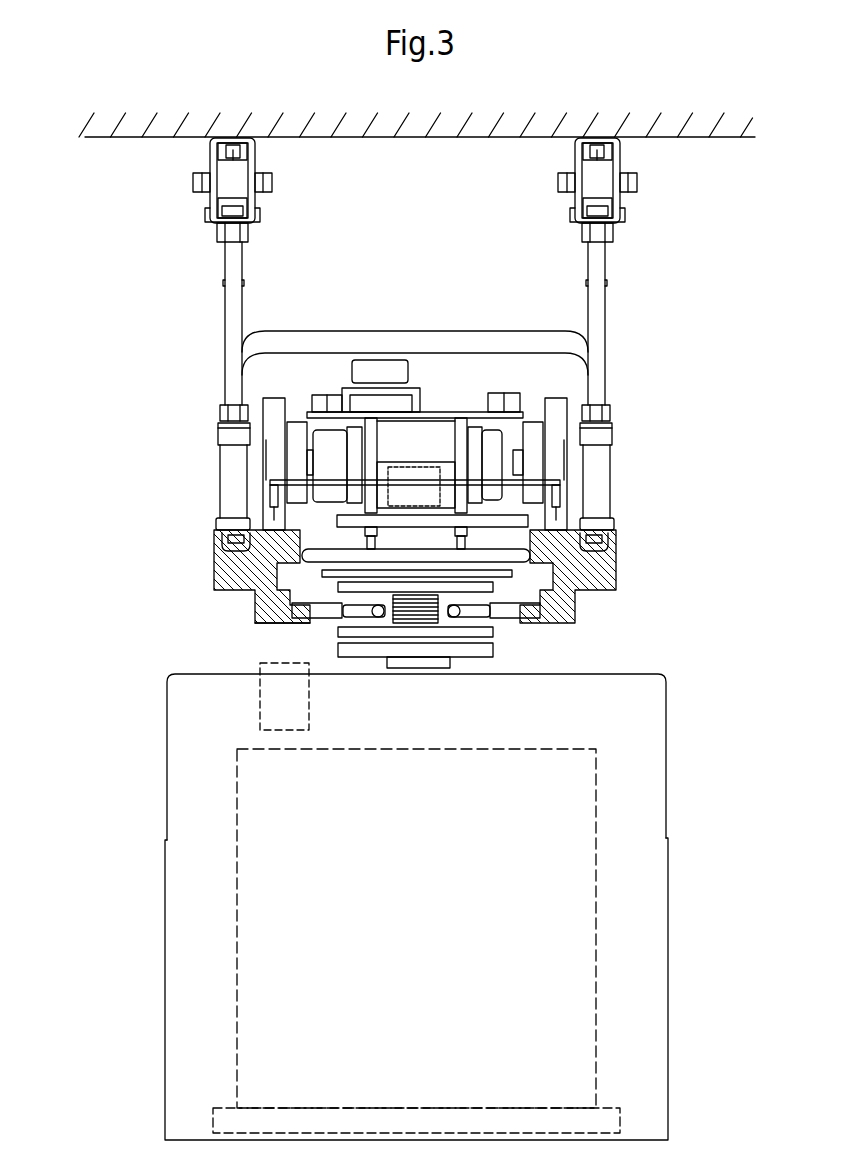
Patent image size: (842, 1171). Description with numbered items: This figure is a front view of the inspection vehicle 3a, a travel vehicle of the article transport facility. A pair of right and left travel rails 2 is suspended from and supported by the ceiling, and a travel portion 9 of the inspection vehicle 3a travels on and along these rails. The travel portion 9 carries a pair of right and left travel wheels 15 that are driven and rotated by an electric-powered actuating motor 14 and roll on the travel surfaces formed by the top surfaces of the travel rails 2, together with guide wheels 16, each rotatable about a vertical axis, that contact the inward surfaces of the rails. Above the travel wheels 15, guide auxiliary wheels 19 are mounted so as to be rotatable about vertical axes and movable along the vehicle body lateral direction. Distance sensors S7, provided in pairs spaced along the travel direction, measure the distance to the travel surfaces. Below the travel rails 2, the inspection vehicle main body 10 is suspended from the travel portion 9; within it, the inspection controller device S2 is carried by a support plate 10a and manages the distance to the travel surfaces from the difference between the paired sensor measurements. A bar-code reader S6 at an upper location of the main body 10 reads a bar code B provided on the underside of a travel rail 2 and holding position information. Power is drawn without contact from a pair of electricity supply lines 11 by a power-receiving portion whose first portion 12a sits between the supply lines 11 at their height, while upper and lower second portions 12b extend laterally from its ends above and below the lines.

The travel portion 9 is at (452, 383).
The electric-powered actuating motor 14 is at (302, 430).
The guide auxiliary wheels 19 is at (379, 372).
The travel wheels 15 is at (273, 410).
The distance sensors S7 is at (275, 497).
The travel rails 2 is at (214, 550).
The guide wheels 16 is at (310, 555).
The bar code B is at (253, 628).
The electricity supply lines 11 is at (338, 615).
The second portions 12b is at (555, 570).
The first portion 12a is at (422, 628).
The bar-code reader S6 is at (262, 708).
The inspection vehicle 3a is at (680, 752).
The inspection vehicle main body 10 is at (668, 855).
The inspection controller device S2 is at (237, 940).
The support plate 10a is at (213, 1115).